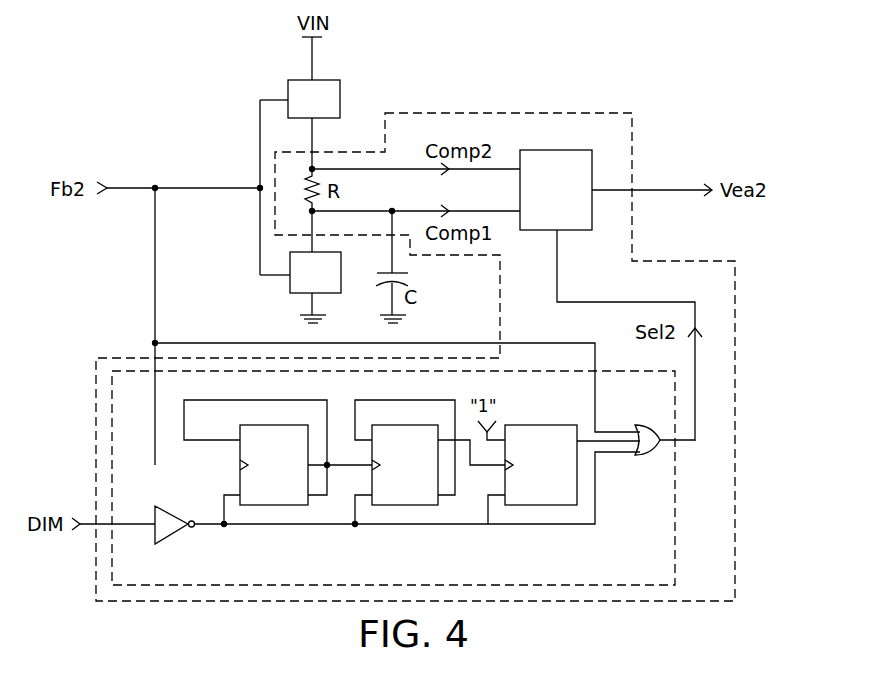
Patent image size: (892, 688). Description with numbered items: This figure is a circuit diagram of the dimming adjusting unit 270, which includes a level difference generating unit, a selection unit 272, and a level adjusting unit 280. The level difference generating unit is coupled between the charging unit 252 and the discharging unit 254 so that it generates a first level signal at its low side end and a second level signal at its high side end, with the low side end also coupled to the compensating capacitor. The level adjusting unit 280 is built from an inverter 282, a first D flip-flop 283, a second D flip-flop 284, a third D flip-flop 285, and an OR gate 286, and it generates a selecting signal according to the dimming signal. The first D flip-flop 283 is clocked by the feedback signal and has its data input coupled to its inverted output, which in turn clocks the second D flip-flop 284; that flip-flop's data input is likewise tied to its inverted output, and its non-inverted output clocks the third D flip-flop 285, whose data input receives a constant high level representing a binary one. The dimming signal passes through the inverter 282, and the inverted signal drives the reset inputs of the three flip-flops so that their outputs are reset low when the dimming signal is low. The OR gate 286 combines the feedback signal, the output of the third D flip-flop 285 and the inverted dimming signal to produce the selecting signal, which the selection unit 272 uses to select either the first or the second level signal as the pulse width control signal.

The charging unit 252 is at (331, 111).
The discharging unit 254 is at (332, 284).
The dimming adjusting unit 270 is at (617, 128).
The selection unit 272 is at (574, 201).
The level adjusting unit 280 is at (122, 380).
The inverter 282 is at (180, 532).
The first D flip-flop 283 is at (272, 506).
The second D flip-flop 284 is at (402, 506).
The third D flip-flop 285 is at (533, 506).
The OR gate 286 is at (652, 456).